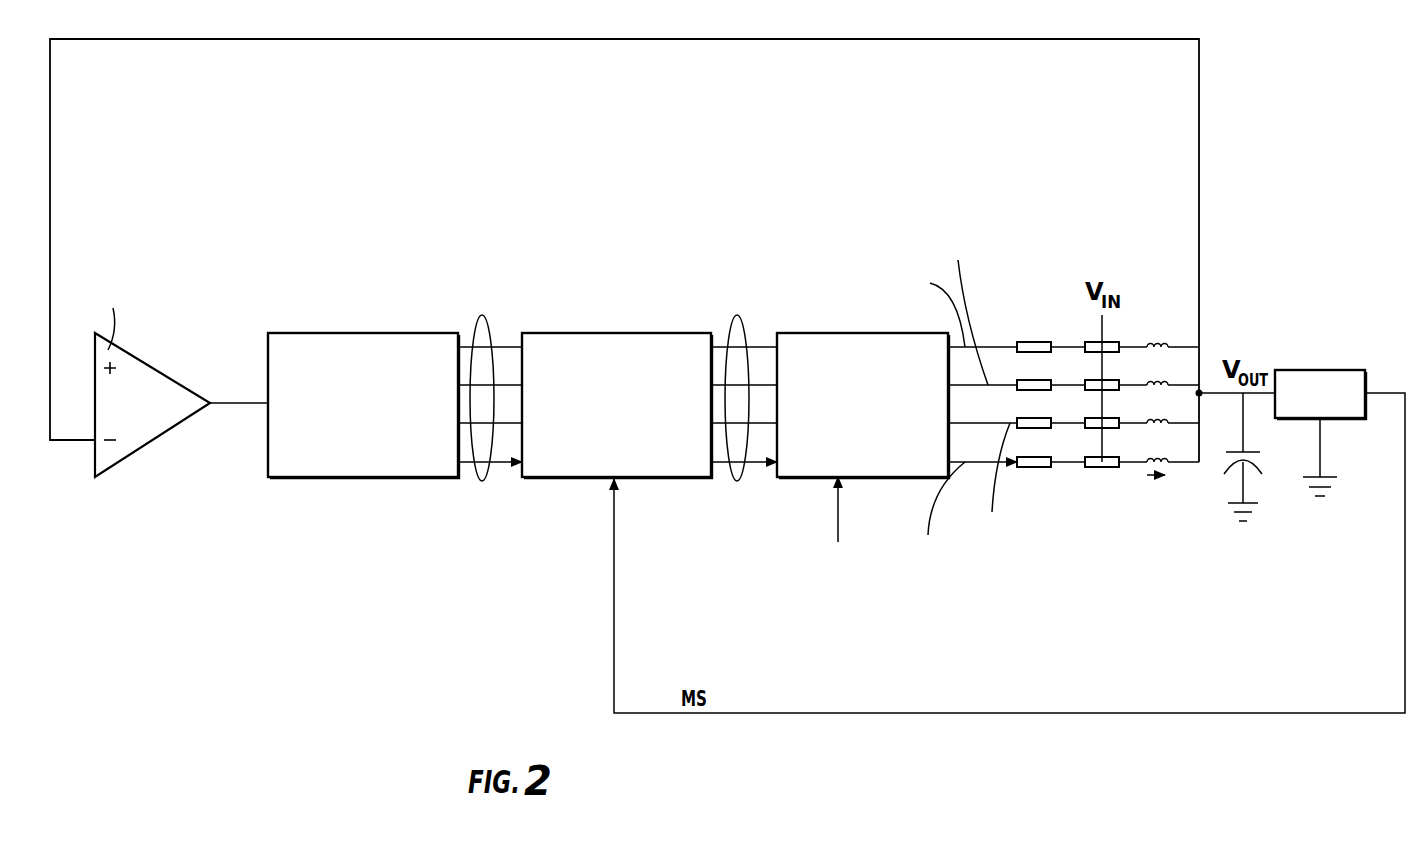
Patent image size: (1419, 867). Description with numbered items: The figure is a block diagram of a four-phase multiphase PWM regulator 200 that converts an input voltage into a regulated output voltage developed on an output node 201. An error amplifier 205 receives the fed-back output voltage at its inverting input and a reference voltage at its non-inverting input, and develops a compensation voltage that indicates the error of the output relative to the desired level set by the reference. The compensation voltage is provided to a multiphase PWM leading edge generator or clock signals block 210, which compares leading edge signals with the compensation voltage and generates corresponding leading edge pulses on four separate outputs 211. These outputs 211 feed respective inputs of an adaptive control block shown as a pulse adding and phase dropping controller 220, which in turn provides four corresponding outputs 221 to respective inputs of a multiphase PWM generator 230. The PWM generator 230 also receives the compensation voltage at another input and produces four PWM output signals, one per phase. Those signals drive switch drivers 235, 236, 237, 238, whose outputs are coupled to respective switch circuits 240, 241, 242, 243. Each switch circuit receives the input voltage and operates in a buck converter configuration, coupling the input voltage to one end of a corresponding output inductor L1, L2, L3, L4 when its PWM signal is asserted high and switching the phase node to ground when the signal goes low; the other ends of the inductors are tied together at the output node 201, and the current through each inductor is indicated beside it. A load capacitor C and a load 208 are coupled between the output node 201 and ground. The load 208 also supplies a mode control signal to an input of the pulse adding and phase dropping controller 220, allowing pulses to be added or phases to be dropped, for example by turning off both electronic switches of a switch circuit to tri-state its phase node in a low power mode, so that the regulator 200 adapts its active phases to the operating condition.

The multiphase PWM regulator 200 is at (245, 708).
The output node 201 is at (835, 39).
The error amplifier 205 is at (157, 370).
The load 208 is at (1318, 370).
The multiphase PWM leading edge generator or clock signals block 210 is at (440, 338).
The outputs 211 is at (482, 315).
The pulse adding and phase dropping controller 220 is at (630, 338).
The outputs 221 is at (737, 315).
The multiphase PWM generator 230 is at (842, 338).
The switch driver 235 is at (1037, 343).
The switch driver 236 is at (1030, 385).
The switch driver 237 is at (1024, 428).
The switch driver 238 is at (1045, 467).
The switch circuit 240 is at (1112, 343).
The switch circuit 241 is at (1112, 385).
The switch circuit 242 is at (1112, 428).
The switch circuit 243 is at (1108, 467).
The output inductor L1 is at (1178, 347).
The output inductor L2 is at (1180, 385).
The output inductor L3 is at (1180, 423).
The output inductor L4 is at (1185, 464).
The load capacitor C is at (1241, 457).